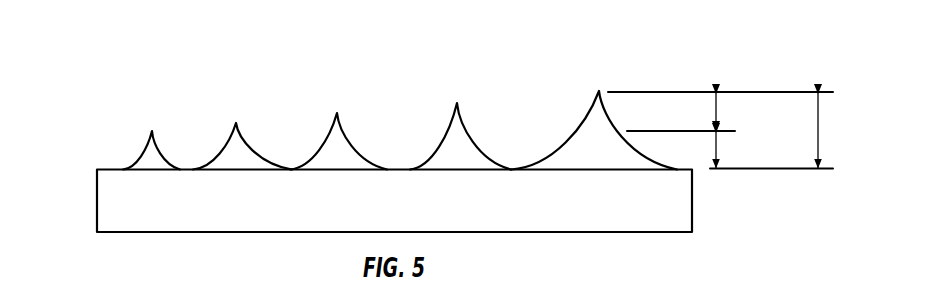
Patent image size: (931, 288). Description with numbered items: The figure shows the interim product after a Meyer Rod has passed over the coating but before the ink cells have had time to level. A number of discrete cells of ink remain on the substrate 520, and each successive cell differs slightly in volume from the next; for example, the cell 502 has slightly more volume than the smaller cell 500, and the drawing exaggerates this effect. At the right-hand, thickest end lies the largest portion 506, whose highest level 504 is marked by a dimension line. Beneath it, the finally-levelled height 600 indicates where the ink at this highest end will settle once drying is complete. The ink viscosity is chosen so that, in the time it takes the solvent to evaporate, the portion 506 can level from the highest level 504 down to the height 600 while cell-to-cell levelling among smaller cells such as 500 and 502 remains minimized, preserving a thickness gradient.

The cell 500 is at (143, 155).
The cell 502 is at (228, 157).
The highest level 504 is at (576, 151).
The portion 506 is at (816, 133).
The substrate 520 is at (97, 196).
The finally-levelled height 600 is at (718, 146).